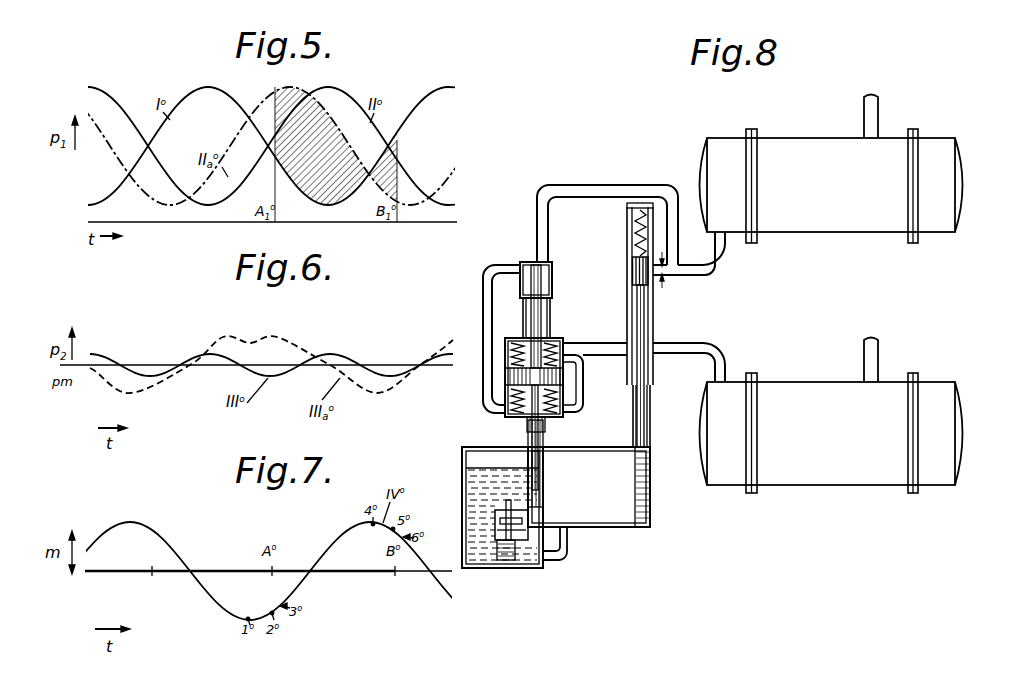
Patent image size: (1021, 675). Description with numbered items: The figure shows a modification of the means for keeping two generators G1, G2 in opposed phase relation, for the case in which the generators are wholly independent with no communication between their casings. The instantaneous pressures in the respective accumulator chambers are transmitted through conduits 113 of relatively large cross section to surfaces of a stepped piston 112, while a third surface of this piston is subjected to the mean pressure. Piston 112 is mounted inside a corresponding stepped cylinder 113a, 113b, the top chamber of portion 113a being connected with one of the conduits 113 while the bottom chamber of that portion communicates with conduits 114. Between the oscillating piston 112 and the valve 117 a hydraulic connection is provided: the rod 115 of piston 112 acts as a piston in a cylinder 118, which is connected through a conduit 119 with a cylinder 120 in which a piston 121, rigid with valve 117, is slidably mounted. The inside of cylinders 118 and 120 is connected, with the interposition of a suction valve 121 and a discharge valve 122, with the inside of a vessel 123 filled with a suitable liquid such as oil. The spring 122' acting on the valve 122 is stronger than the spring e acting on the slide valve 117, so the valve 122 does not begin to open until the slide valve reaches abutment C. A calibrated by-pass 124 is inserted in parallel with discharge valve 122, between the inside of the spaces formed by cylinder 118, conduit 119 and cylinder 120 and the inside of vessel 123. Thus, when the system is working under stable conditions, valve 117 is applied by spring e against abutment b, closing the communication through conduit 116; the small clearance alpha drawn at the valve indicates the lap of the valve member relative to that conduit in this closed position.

The stepped piston 112 is at (536, 307).
The conduit 113 is at (586, 185).
The stepped cylinder portion 113a is at (503, 343).
The stepped cylinder portion 113b is at (537, 280).
The conduit 114 is at (505, 383).
The piston rod 115 is at (545, 430).
The conduit 116 is at (693, 274).
The slide valve 117 is at (627, 269).
The cylinder 118 is at (543, 463).
The conduit 119 is at (593, 517).
The cylinder 120 is at (650, 495).
The piston / suction valve 121 is at (642, 427).
The discharge valve 122 is at (499, 521).
The spring 122' is at (521, 568).
The vessel 123 is at (466, 468).
The calibrated by-pass 124 is at (567, 551).
The abutment C is at (625, 294).
The spring e is at (631, 223).
The abutment b is at (652, 390).
The clearance alpha is at (669, 277).
The generator G1 is at (831, 169).
The generator G2 is at (831, 416).